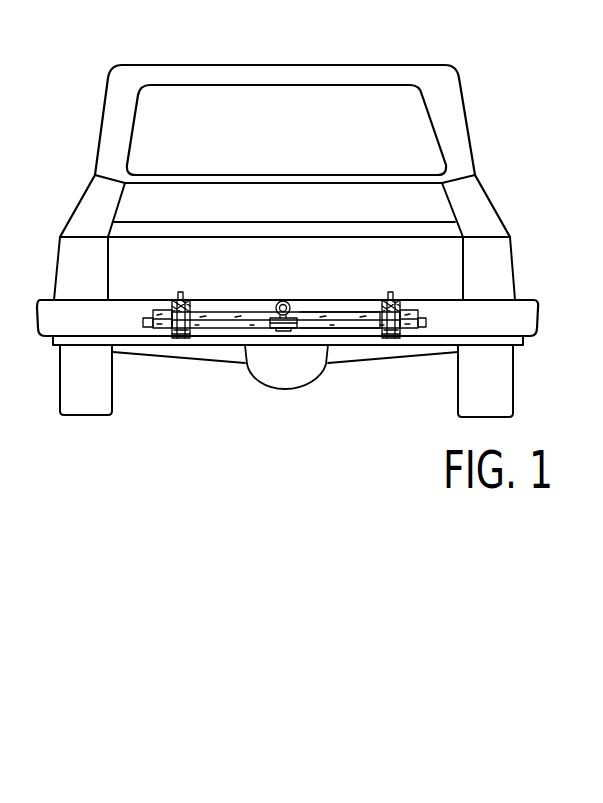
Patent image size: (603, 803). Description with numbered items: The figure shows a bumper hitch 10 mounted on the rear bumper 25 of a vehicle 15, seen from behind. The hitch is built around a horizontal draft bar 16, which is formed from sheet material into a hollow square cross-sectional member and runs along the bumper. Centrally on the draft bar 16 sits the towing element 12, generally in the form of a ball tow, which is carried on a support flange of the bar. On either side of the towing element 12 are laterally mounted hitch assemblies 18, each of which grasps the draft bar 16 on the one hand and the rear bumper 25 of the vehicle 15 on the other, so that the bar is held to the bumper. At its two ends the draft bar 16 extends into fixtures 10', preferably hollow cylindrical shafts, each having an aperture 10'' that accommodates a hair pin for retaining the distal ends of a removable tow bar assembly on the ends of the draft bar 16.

The vehicle 15 is at (493, 172).
The rear bumper 25 is at (528, 330).
The horizontal draft bar 16 is at (210, 325).
The bumper hitch 10 is at (348, 353).
The hitch assembly 18 is at (170, 300).
The towing element 12 is at (283, 300).
The fixture 10' is at (290, 348).
The aperture 10'' is at (291, 317).